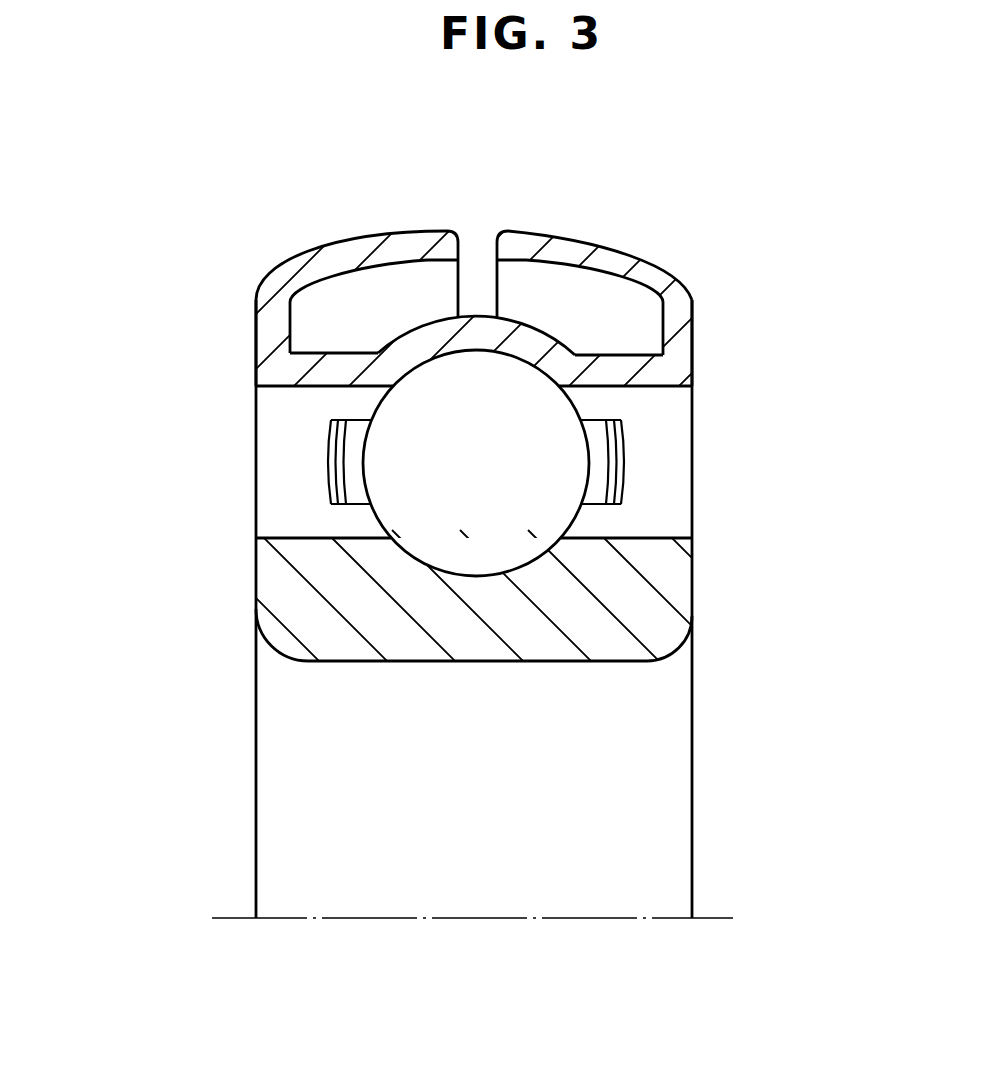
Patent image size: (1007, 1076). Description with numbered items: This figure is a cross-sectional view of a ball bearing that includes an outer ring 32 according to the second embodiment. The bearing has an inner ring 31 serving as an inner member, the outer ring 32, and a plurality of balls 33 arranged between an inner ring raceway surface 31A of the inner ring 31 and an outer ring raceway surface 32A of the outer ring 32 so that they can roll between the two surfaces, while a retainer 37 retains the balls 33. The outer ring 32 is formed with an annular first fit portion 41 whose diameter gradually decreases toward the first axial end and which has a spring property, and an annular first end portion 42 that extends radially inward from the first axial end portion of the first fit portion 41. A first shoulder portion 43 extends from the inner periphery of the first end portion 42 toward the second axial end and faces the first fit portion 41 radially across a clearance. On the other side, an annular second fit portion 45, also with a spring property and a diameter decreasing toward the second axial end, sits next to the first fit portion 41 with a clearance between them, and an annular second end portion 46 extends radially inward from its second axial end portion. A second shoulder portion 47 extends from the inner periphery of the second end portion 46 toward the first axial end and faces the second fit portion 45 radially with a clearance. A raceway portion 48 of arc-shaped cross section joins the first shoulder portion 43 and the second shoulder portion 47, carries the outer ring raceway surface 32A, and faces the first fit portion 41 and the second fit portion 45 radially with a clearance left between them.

The inner ring 31 is at (253, 577).
The inner ring raceway surface 31A is at (493, 570).
The outer ring 32 is at (253, 352).
The outer ring raceway surface 32A is at (515, 357).
The balls 33 is at (537, 487).
The retainer 37 is at (617, 465).
The first fit portion 41 is at (583, 245).
The first end portion 42 is at (687, 315).
The first shoulder portion 43 is at (627, 383).
The second fit portion 45 is at (345, 257).
The second end portion 46 is at (273, 318).
The second shoulder portion 47 is at (327, 373).
The raceway portion 48 is at (460, 340).